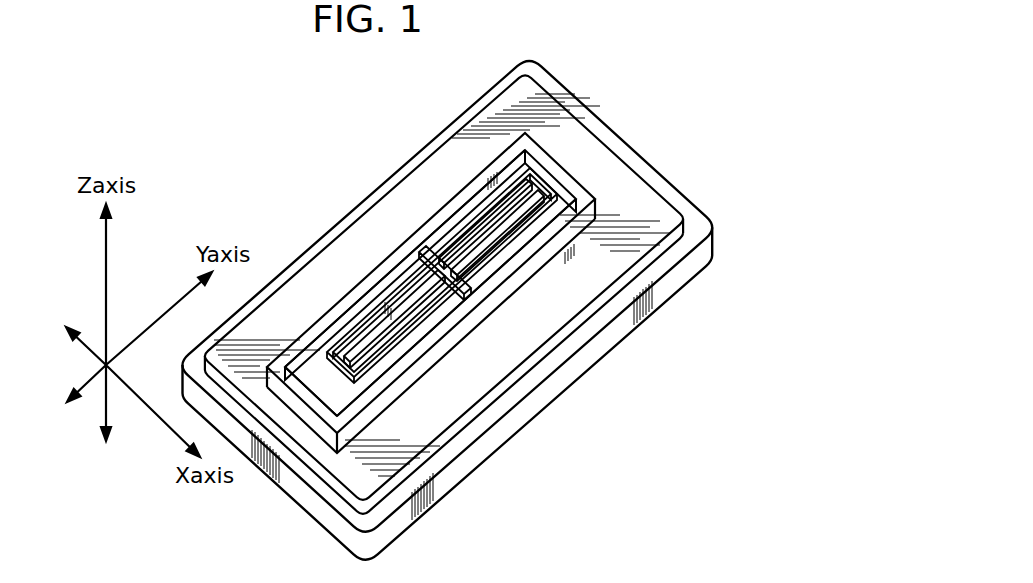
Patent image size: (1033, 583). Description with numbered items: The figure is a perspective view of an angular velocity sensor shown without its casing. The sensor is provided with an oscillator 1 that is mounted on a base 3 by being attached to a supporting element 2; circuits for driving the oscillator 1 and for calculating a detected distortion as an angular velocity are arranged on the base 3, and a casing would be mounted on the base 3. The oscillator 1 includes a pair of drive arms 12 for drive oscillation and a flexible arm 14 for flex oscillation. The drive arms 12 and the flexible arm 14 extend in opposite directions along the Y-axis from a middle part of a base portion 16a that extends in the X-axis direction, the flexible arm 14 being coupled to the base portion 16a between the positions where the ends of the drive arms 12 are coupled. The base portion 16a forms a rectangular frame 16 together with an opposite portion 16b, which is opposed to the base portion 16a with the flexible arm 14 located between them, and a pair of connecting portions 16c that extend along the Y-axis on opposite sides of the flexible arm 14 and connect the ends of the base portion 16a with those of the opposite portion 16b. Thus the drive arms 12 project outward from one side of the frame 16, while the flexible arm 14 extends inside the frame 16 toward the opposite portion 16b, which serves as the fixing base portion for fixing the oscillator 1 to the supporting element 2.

The oscillator 1 is at (461, 211).
The supporting element 2 is at (458, 350).
The base 3 is at (483, 222).
The drive arms 12 is at (500, 278).
The flexible arm 14 is at (437, 353).
The rectangular frame 16 is at (310, 308).
The base portion 16a is at (465, 298).
The opposite portion 16b is at (318, 398).
The connecting portions 16c is at (372, 284).